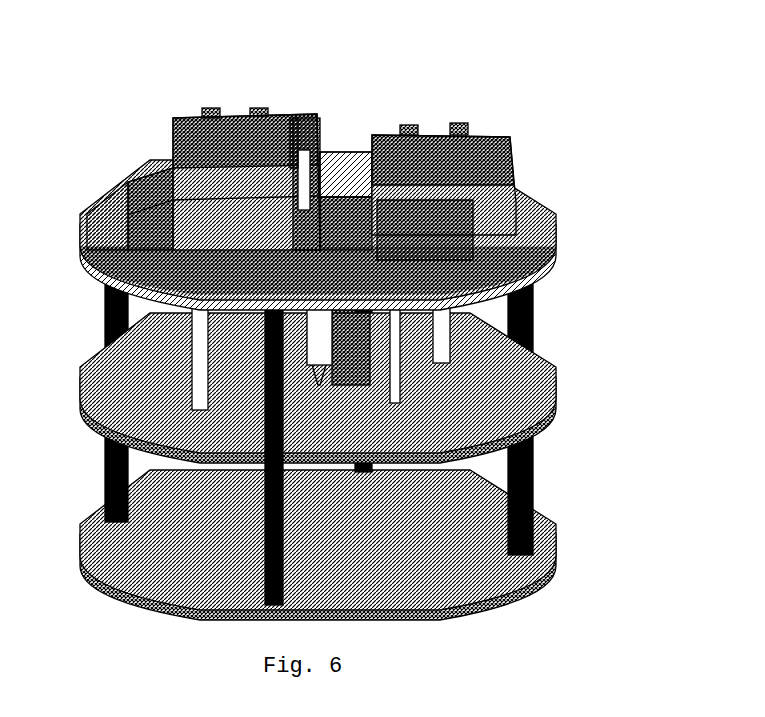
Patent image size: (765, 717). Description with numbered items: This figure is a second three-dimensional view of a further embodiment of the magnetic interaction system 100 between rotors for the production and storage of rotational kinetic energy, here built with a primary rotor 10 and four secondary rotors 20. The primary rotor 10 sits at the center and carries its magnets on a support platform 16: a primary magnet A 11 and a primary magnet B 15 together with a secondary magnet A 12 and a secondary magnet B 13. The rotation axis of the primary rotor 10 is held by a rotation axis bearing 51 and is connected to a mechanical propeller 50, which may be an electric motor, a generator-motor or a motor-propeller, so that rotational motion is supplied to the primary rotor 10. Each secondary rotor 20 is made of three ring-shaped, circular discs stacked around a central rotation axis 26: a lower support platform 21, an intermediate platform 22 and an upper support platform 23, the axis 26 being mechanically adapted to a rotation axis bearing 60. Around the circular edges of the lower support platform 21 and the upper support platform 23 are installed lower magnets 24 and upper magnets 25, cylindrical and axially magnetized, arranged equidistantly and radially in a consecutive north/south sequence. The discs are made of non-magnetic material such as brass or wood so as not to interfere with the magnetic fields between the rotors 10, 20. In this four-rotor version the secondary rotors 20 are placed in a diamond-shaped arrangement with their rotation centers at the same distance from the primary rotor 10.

The magnetic interaction system between rotors 100 is at (150, 115).
The primary rotor 10 is at (328, 138).
The primary magnet A of the primary rotor 11 is at (296, 130).
The secondary magnet A of the primary rotor 12 is at (365, 153).
The secondary magnet B of the primary rotor 13 is at (306, 150).
The primary magnet B of the primary rotor 15 is at (333, 153).
The support platform of the primary rotor 16 is at (247, 117).
The secondary rotor 20 is at (158, 142).
The lower support platform of the secondary rotor 21 is at (557, 212).
The intermediate platform of the secondary rotor 22 is at (520, 185).
The upper support platform of the secondary rotor 23 is at (517, 170).
The lower magnet of the secondary rotor 24 is at (120, 233).
The upper magnet of the secondary rotor 25 is at (118, 200).
The rotation axis of the secondary rotor 26 is at (160, 325).
The mechanical propeller of the primary rotor 50 is at (338, 361).
The rotation axis bearing of the primary rotor 51 is at (321, 337).
The rotation axis bearing of the secondary rotor 60 is at (183, 395).